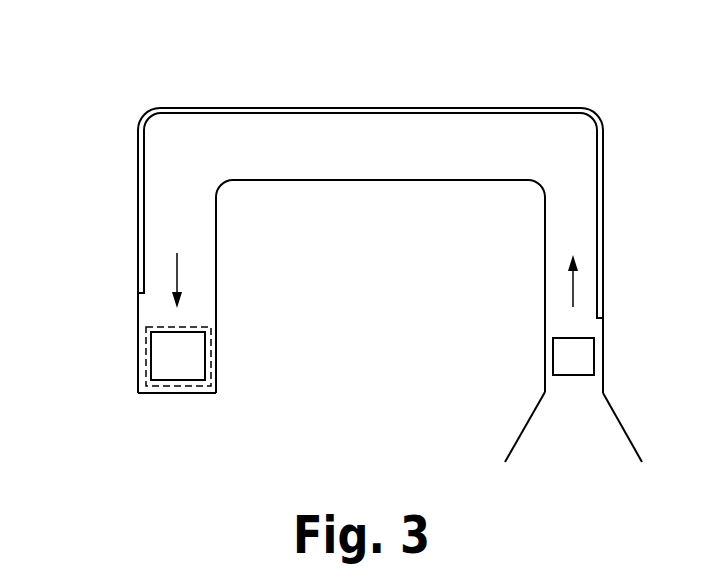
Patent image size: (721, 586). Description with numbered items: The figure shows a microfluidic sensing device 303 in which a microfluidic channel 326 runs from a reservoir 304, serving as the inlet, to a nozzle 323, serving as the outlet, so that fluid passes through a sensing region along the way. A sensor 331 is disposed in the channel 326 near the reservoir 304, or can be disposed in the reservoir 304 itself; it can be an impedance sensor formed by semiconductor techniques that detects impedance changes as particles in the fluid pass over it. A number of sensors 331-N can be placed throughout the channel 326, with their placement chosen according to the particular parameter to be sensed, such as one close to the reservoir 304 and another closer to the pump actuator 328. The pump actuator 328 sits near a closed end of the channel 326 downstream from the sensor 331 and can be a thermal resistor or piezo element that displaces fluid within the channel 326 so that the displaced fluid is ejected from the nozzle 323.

The microfluidic sensing device 303 is at (118, 78).
The number of sensors 331-N is at (477, 108).
The microfluidic channel 326 is at (380, 182).
The reservoir 304 is at (530, 417).
The nozzle 323 is at (146, 349).
The pump actuator 328 is at (205, 350).
The sensor 331 is at (594, 352).